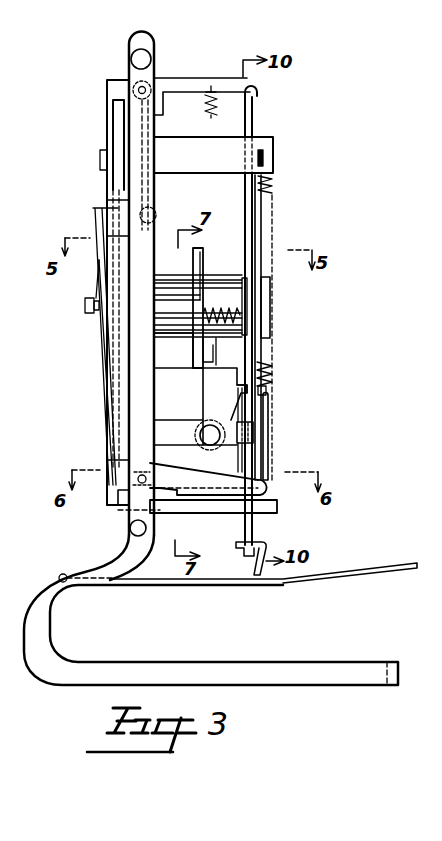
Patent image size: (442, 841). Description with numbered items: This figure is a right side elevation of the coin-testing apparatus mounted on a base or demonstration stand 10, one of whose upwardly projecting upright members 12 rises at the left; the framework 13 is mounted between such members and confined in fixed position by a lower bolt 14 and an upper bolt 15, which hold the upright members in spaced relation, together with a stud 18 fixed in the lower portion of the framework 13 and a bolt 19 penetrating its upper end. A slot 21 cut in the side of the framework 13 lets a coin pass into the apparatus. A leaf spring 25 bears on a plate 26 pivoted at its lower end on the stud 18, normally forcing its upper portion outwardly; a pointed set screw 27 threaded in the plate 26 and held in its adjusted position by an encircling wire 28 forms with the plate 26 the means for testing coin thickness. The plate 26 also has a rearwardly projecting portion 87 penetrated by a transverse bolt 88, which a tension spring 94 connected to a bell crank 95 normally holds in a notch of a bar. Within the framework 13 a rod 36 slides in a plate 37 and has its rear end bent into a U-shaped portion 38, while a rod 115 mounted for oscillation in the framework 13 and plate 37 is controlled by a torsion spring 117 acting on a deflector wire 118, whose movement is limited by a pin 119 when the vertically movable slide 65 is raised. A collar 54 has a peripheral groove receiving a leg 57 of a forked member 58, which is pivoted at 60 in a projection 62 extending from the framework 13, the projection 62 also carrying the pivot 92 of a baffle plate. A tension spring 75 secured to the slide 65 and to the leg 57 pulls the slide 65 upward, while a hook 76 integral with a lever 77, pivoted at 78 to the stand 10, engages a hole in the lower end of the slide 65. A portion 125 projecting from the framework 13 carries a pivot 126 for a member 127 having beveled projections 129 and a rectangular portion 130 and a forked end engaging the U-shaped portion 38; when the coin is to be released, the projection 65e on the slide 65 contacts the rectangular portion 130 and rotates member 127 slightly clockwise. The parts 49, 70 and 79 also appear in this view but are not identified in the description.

The base or demonstration stand 10 is at (316, 658).
The upright member 12 is at (130, 53).
The framework 13 is at (108, 80).
The bolt 14 is at (130, 528).
The bolt 15 is at (151, 58).
The stud 18 is at (138, 480).
The bolt 19 is at (150, 86).
The slot 21 is at (113, 118).
The leaf spring 25 is at (100, 162).
The plate 26 is at (102, 368).
The set screw 27 is at (85, 305).
The wire 28 is at (90, 295).
The rod 36 is at (181, 350).
The plate 37 is at (204, 258).
The U-shaped portion 38 is at (194, 367).
The bar 49 is at (177, 278).
The collar 54 is at (275, 295).
The leg 57 is at (265, 226).
The forked member 58 is at (272, 446).
The pivot 60 is at (266, 156).
The projection 62 is at (213, 155).
The vertically movable slide 65 is at (262, 104).
The projection 65e is at (268, 412).
The plate 70 is at (279, 513).
The tension spring 75 is at (272, 186).
The hook 76 is at (250, 565).
The lever 77 is at (306, 583).
The pivot 78 is at (56, 577).
The foot 79 is at (213, 484).
The rearwardly projecting portion 87 is at (96, 210).
The transverse bolt 88 is at (157, 208).
The pivot 92 is at (262, 148).
The tension spring 94 is at (205, 104).
The bell crank 95 is at (200, 78).
The rod 115 is at (186, 318).
The torsion spring 117 is at (205, 275).
The deflector wire 118 is at (238, 464).
The pin 119 is at (221, 336).
The portion 125 is at (195, 432).
The pivot 126 is at (211, 446).
The member 127 is at (225, 406).
The beveled projections 129 is at (240, 389).
The rectangular portion 130 is at (254, 428).